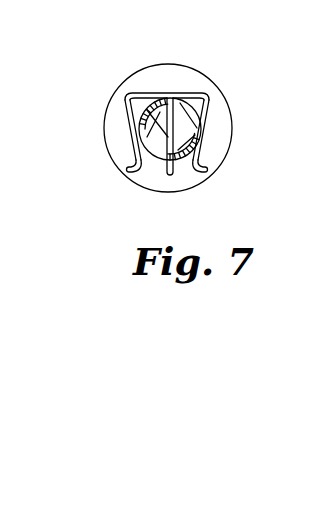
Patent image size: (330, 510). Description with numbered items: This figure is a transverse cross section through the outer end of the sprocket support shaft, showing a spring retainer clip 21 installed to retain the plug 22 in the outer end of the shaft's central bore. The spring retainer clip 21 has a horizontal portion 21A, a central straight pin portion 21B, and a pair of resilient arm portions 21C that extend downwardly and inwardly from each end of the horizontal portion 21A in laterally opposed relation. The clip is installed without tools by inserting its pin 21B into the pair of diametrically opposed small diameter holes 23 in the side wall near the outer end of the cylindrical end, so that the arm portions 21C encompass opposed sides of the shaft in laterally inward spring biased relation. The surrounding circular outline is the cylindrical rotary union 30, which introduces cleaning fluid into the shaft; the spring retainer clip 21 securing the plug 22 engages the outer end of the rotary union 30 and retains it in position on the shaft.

The rotary union 30 is at (163, 64).
The spring retainer clip 21 is at (173, 106).
The horizontal portion 21A is at (190, 92).
The central straight pin portion 21B is at (205, 124).
The resilient arm portions 21C is at (140, 142).
The plug 22 is at (167, 122).
The small diameter holes 23 is at (175, 120).